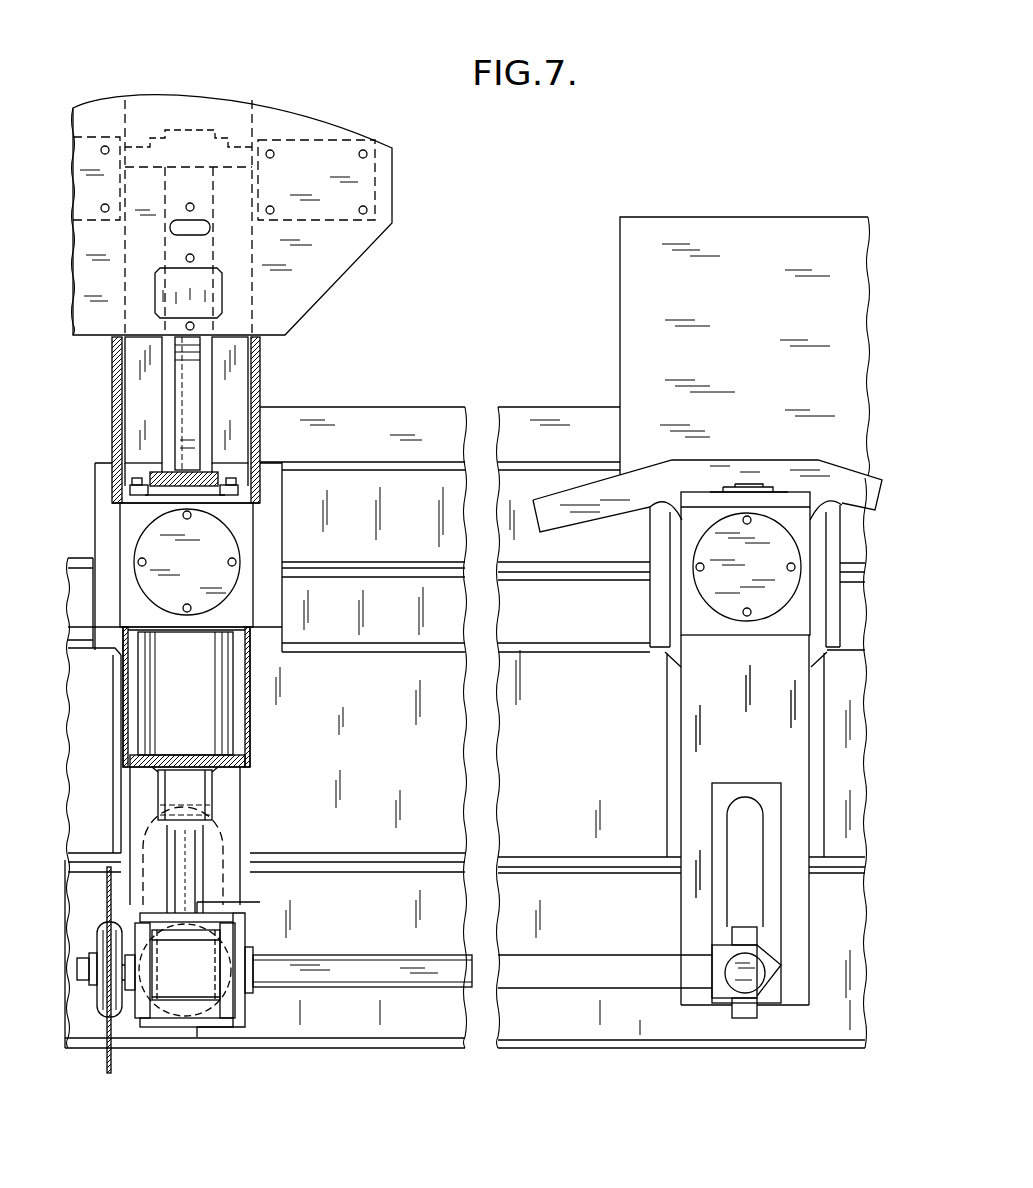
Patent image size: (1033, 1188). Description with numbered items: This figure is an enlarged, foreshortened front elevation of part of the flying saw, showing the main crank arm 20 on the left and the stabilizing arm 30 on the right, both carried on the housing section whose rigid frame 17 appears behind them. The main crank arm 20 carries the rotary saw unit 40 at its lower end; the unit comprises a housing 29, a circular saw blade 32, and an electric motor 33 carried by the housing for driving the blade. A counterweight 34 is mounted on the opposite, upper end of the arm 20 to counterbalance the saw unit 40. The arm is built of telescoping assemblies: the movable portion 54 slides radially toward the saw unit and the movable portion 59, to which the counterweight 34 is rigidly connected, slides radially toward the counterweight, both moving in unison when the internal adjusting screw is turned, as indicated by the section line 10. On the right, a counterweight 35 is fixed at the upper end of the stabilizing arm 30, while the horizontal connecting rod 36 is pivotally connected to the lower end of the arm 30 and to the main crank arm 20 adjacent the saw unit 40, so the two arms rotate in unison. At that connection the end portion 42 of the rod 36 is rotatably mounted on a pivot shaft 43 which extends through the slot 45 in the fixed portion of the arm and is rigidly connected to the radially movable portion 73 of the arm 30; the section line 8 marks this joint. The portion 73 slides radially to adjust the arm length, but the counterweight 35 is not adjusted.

The section line 8- 8 is at (747, 300).
The main base section 10 is at (190, 130).
The rigid frame 17 is at (378, 633).
The main crank arm 20 is at (250, 730).
The housing 29 is at (245, 1015).
The column 30 is at (664, 732).
The circular saw blade 32 is at (107, 893).
The electric motor 33 is at (178, 988).
The counterweight 34 is at (332, 128).
The counterweight 35 is at (628, 273).
The horizontal connecting rod 36 is at (403, 963).
The rotary saw unit 40 is at (103, 1052).
The end portion of the rod 42 is at (712, 972).
The pivot shaft 43 is at (752, 980).
The slot 45 is at (731, 825).
The movable portion 54 is at (226, 793).
The movable portion 59 is at (235, 363).
The radially movable portion 73 is at (797, 915).